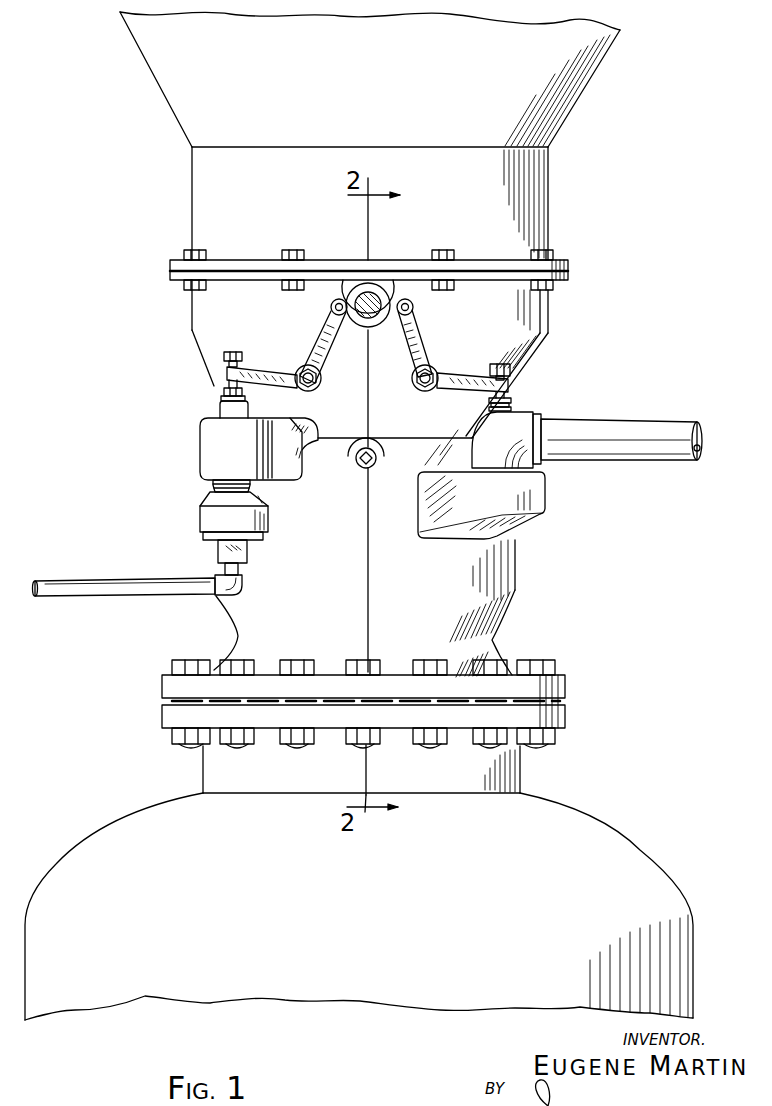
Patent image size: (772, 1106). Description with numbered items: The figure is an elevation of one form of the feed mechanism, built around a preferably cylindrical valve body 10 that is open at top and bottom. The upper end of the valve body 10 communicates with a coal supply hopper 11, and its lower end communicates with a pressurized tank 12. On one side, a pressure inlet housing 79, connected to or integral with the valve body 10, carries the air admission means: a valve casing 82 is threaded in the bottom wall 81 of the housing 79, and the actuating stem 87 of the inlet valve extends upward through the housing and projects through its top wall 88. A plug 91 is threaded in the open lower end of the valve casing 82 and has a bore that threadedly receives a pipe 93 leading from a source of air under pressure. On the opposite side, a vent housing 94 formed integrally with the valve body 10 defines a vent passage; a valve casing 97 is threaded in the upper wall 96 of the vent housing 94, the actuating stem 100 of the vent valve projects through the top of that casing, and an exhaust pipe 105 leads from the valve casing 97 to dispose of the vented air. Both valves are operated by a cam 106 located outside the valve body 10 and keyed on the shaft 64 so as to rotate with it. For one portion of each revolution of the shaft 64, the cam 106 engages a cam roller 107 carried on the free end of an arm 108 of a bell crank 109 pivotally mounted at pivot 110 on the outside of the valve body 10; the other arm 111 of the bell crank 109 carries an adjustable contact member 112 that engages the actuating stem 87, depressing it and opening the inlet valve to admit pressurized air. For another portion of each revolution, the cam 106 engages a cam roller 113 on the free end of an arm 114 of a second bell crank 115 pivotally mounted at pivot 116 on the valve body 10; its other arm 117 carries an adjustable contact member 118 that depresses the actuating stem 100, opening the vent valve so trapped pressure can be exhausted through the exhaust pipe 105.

The valve body 10 is at (515, 560).
The coal supply hopper 11 is at (551, 165).
The pressurized tank 12 is at (596, 825).
The shaft 64 is at (362, 297).
The pressure inlet housing 79 is at (205, 458).
The bottom wall 81 is at (262, 484).
The valve casing 82 is at (202, 522).
The actuating stem 87 is at (225, 388).
The top wall 88 is at (270, 421).
The plug 91 is at (245, 551).
The pipe 93 is at (225, 566).
The vent housing 94 is at (546, 507).
The upper wall 96 is at (438, 471).
The valve casing 97 is at (533, 413).
The actuating stem 100 is at (512, 398).
The exhaust pipe 105 is at (627, 462).
The cam 106 is at (373, 332).
The cam roller 107 is at (331, 307).
The arm 108 is at (324, 332).
The bell crank 109 is at (327, 354).
The pivot 110 is at (317, 390).
The arm 111 is at (268, 372).
The adjustable contact member 112 is at (233, 352).
The cam roller 113 is at (413, 309).
The arm 114 is at (422, 331).
The bell crank 115 is at (413, 366).
The pivot 116 is at (411, 389).
The arm 117 is at (448, 376).
The adjustable contact member 118 is at (500, 362).